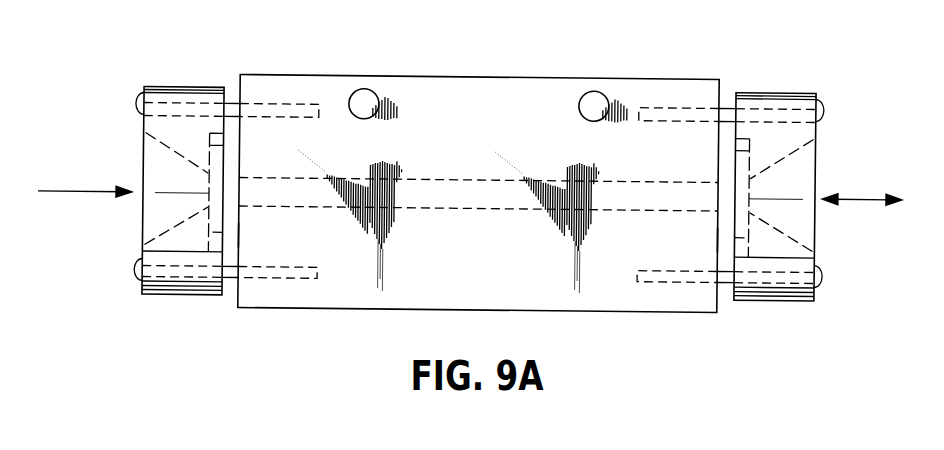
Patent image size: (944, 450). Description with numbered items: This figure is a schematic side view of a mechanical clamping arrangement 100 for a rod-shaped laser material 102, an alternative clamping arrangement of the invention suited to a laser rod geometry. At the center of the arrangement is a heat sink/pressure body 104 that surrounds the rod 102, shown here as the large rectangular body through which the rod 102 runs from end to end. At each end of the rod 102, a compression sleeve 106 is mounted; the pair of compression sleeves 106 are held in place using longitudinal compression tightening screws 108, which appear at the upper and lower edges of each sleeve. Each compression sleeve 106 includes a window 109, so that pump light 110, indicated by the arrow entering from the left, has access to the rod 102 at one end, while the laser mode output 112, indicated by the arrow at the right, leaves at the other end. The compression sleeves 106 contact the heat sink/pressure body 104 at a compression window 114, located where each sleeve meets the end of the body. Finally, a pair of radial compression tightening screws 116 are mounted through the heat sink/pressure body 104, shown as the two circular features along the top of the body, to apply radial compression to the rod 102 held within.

The mechanical clamping arrangement 100 is at (257, 350).
The rod-shaped laser material 102 is at (481, 228).
The heat sink/pressure body 104 is at (648, 79).
The compression sleeves 106 is at (165, 298).
The longitudinal compression tightening screws 108 is at (141, 104).
The window 109 is at (155, 207).
The pump light 110 is at (78, 192).
The laser mode output 112 is at (858, 195).
The compression window 114 is at (240, 237).
The radial compression tightening screws 116 is at (365, 97).